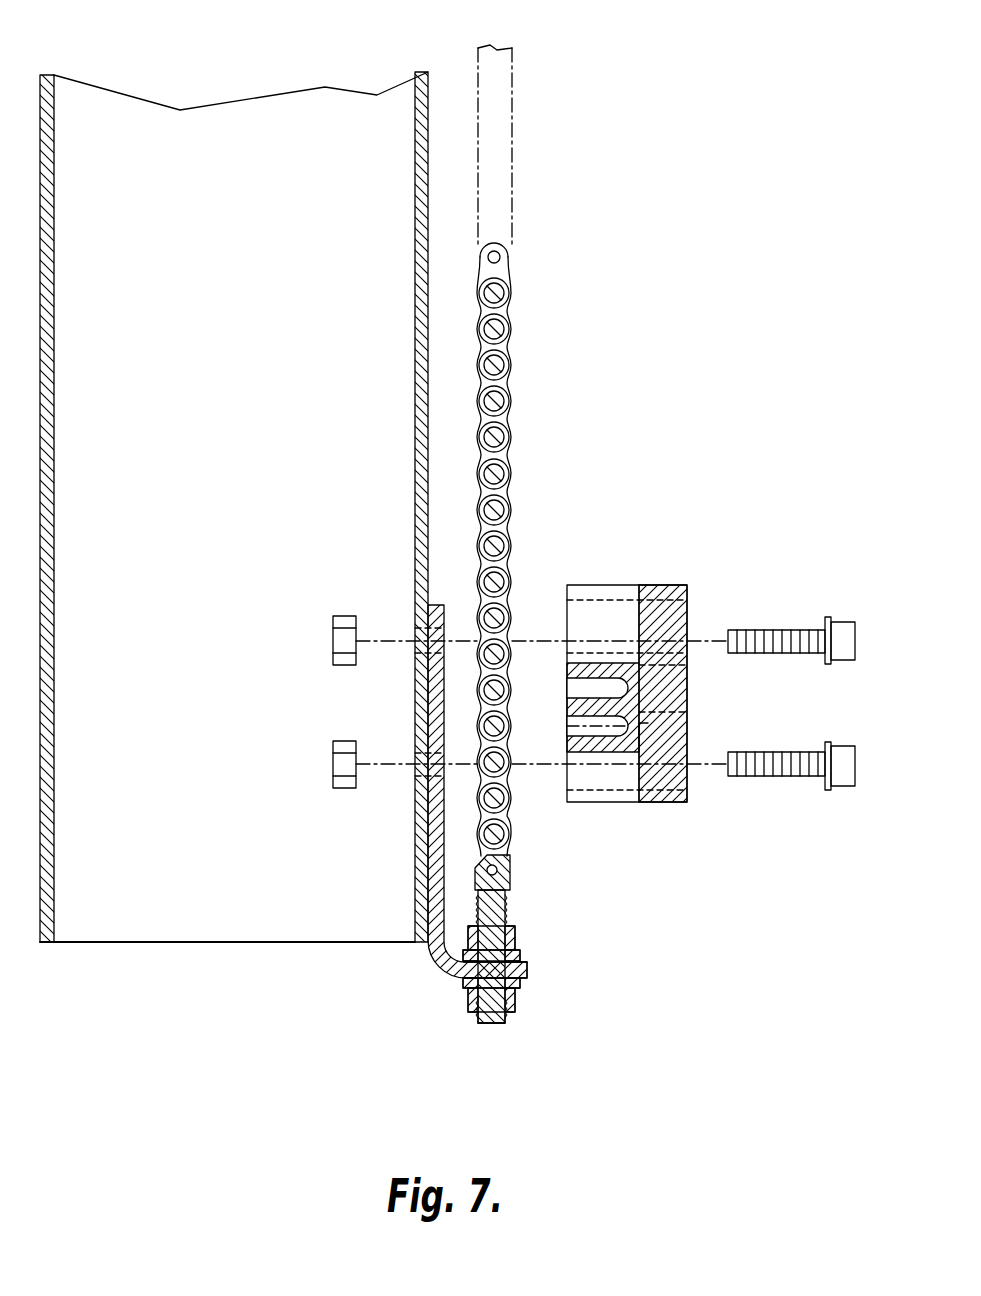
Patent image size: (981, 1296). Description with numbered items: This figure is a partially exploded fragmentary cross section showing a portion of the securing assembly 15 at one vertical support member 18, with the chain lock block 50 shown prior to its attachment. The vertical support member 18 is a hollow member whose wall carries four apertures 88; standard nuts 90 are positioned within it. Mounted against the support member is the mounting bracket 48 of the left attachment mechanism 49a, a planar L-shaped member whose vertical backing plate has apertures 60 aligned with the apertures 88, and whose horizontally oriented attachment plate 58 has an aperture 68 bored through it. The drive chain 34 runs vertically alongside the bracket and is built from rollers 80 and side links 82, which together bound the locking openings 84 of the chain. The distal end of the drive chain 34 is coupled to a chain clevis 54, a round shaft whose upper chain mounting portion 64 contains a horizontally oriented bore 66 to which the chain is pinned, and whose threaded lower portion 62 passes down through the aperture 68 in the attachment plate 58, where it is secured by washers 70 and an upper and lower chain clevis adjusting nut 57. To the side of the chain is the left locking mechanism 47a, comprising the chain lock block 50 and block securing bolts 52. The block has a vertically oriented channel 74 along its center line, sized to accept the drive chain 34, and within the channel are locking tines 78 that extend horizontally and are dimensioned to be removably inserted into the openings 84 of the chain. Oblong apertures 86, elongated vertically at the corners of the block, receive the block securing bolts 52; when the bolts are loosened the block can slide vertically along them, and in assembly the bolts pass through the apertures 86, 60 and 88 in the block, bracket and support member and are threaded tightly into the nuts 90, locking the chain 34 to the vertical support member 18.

The securing assembly 15 is at (531, 999).
The vertical support member 18 is at (251, 100).
The drive chain 34 is at (553, 450).
The left locking mechanism 47a is at (662, 619).
The mounting bracket 48 is at (430, 968).
The left attachment mechanism 49a is at (474, 1052).
The chain lock block 50 is at (694, 589).
The block securing bolt 52 is at (843, 617).
The chain clevis 54 is at (508, 895).
The chain clevis adjusting nut 57 is at (518, 940).
The attachment plate 58 is at (455, 978).
The aperture 60 is at (424, 612).
The threaded lower portion 62 is at (505, 1022).
The chain mounting portion 64 is at (510, 883).
The bore 66 is at (510, 870).
The aperture 68 is at (524, 975).
The washer 70 is at (524, 958).
The channel 74 is at (593, 593).
The locking tine 78 is at (567, 675).
The roller 80 is at (510, 293).
The side link 82 is at (510, 437).
The locking opening 84 is at (512, 455).
The oblong aperture 86 is at (688, 659).
The aperture 88 is at (418, 622).
The nut 90 is at (342, 616).